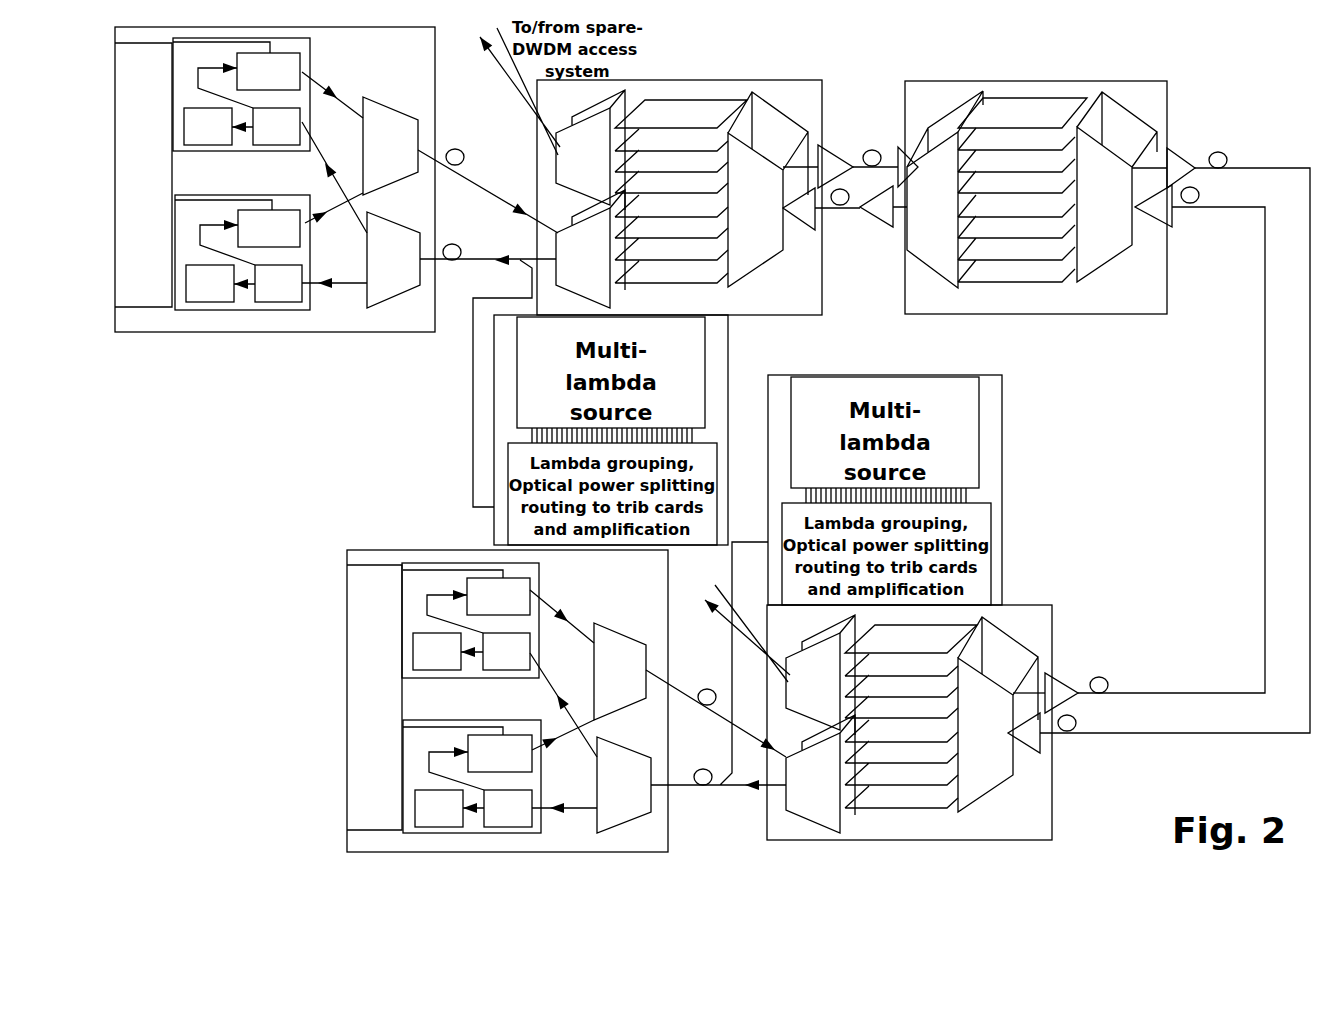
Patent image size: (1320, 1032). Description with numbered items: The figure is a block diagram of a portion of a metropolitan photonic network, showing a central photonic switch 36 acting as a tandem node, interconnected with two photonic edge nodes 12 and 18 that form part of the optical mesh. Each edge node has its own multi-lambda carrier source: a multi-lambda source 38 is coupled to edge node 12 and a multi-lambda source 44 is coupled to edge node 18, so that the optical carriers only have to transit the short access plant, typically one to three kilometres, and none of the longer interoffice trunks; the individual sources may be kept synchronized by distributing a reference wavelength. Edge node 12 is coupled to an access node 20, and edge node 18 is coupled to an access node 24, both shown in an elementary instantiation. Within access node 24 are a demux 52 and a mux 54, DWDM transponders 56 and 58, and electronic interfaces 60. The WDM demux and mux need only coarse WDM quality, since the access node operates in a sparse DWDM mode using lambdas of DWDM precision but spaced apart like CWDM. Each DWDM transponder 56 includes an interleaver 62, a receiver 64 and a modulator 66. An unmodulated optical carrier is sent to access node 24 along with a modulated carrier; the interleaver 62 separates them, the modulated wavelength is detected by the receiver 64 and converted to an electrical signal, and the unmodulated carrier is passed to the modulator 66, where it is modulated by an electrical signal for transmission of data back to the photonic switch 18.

The photonic edge node 12 is at (818, 232).
The photonic edge node 18 is at (1053, 822).
The access node 20 is at (415, 332).
The access node 24 is at (373, 548).
The central photonic switch 36 is at (1167, 120).
The multi-lambda carrier source 38 is at (723, 360).
The multi-lambda carrier source 44 is at (993, 452).
The demux 52 is at (640, 812).
The mux 54 is at (648, 652).
The DWDM transponder 56 is at (497, 615).
The DWDM transponder 58 is at (447, 827).
The electronic interfaces 60 is at (347, 705).
The interleaver 62 is at (493, 670).
The receiver 64 is at (435, 670).
The modulator 66 is at (537, 585).